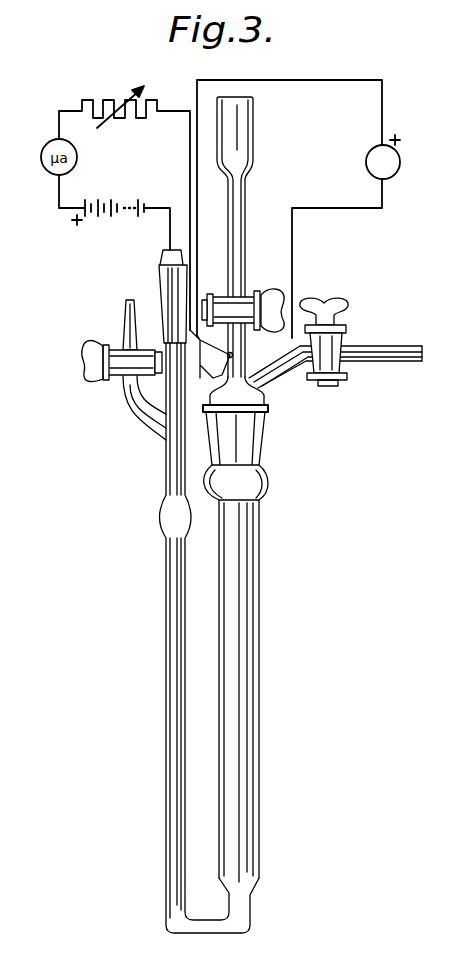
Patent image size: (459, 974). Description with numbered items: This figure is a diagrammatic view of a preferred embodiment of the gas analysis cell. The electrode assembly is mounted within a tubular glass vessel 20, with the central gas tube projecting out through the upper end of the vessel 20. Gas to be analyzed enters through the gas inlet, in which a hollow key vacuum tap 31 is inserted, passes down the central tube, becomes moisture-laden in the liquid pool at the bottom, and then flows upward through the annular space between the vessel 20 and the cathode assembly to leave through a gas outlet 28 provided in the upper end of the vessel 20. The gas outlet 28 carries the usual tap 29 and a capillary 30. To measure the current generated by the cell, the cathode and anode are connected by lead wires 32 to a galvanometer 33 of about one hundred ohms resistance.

The tubular glass vessel 20 is at (258, 707).
The gas outlet 28 is at (284, 368).
The tap 29 is at (343, 336).
The capillary 30 is at (400, 362).
The hollow key vacuum tap 31 is at (244, 292).
The lead wires 32 is at (212, 374).
The galvanometer 33 is at (366, 156).